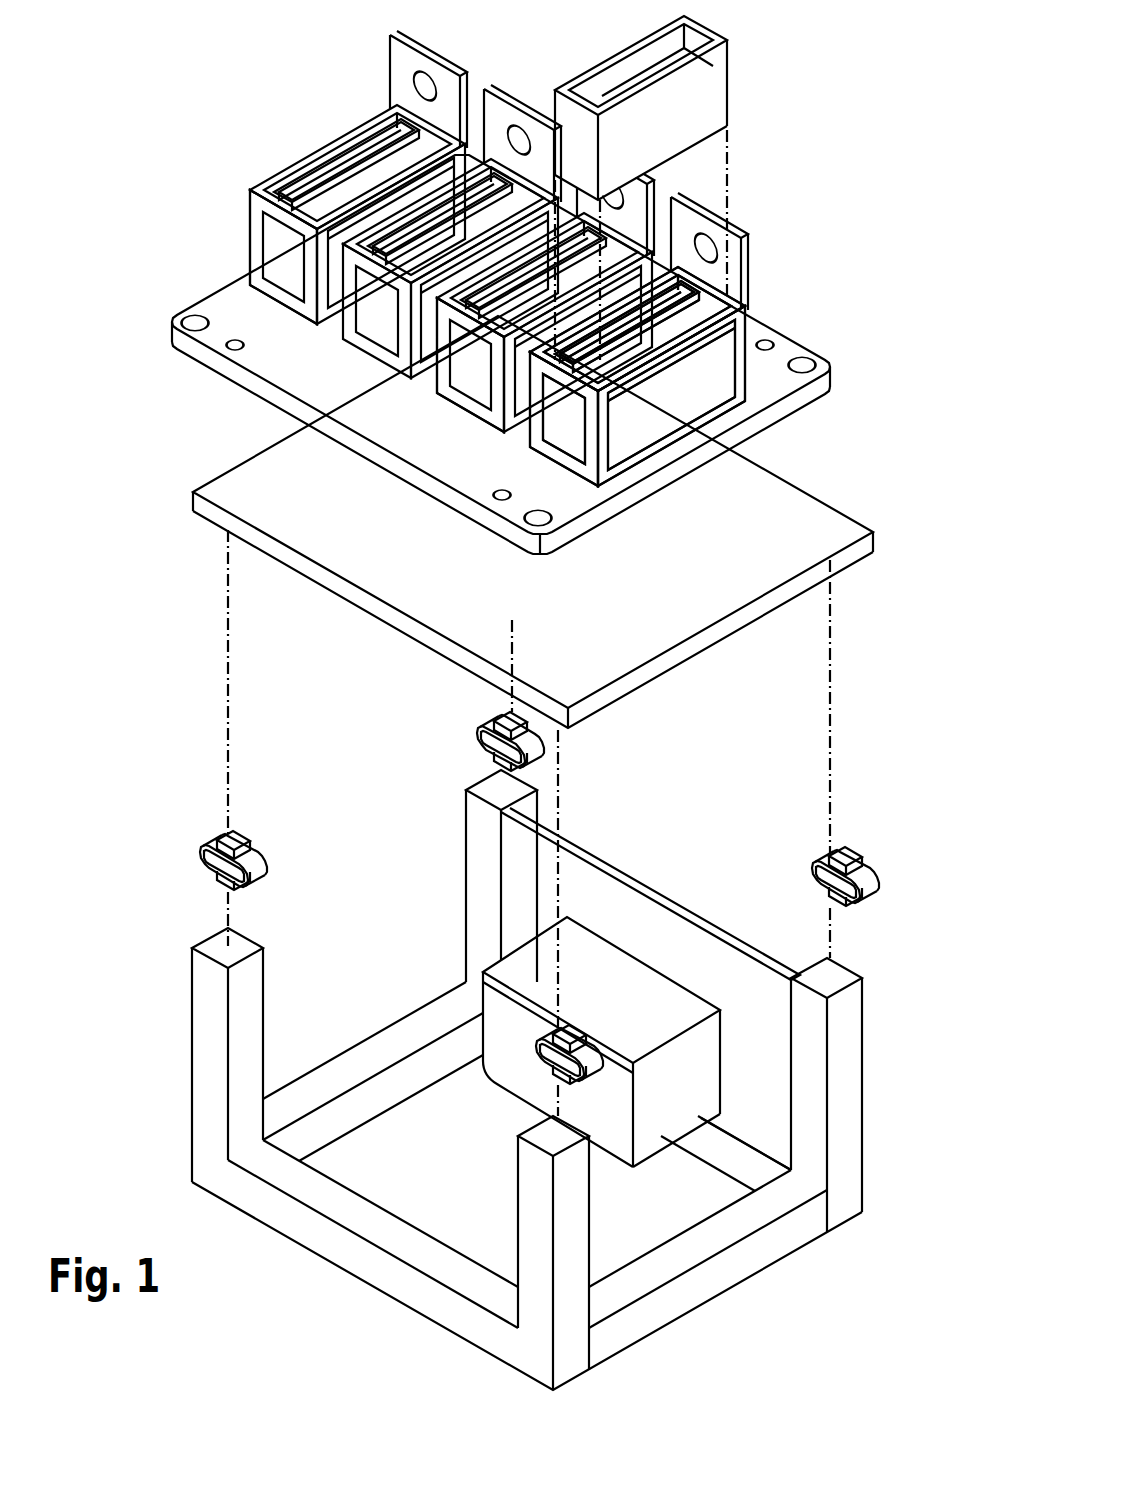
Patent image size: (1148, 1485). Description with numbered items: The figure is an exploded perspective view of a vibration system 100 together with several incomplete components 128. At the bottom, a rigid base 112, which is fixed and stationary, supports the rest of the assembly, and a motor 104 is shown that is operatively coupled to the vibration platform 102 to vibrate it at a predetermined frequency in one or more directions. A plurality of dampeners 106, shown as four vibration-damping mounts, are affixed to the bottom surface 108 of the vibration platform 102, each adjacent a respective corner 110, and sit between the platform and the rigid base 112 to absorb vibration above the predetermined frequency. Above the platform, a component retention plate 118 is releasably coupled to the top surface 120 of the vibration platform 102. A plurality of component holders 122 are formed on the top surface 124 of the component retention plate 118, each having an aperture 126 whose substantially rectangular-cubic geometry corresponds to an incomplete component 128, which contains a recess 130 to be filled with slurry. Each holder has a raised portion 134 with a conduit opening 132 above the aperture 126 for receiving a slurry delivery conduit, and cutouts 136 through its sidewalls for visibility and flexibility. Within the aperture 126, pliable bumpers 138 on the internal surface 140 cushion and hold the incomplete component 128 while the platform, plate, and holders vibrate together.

The vibration system 100 is at (515, 700).
The vibration platform 102 is at (750, 480).
The motor 104 is at (678, 1065).
The dampeners 106 is at (480, 737).
The bottom surface 108 is at (533, 522).
The corner 110 is at (570, 522).
The rigid base 112 is at (840, 1008).
The component retention plate 118 is at (546, 354).
The top surface 120 is at (533, 522).
The component holders 122 is at (745, 325).
The top surface 124 is at (457, 450).
The aperture 126 is at (466, 274).
The incomplete component 128 is at (674, 105).
The recess 130 is at (648, 62).
The conduit opening 132 is at (713, 247).
The raised portion 134 is at (634, 170).
The cutout 136 is at (265, 247).
The bumpers 138 is at (466, 283).
The internal surface 140 is at (283, 189).